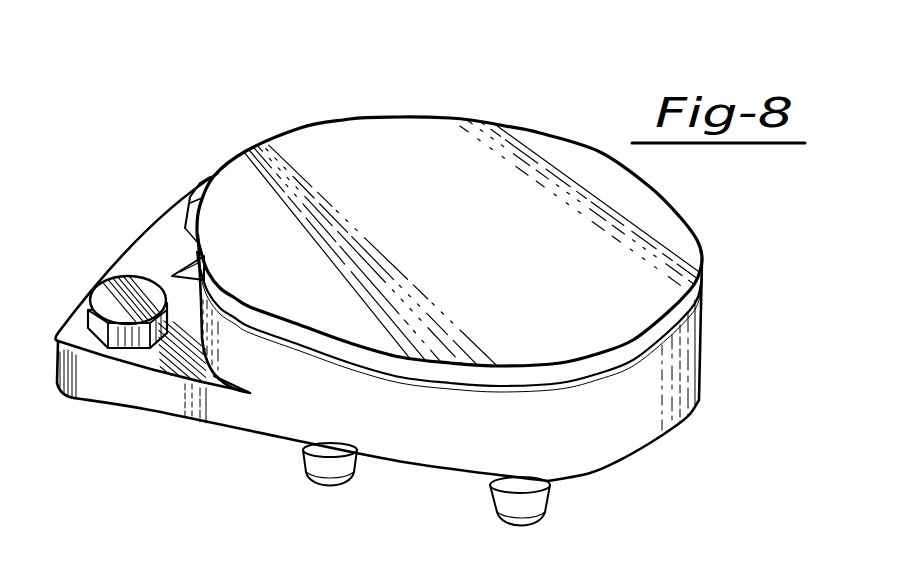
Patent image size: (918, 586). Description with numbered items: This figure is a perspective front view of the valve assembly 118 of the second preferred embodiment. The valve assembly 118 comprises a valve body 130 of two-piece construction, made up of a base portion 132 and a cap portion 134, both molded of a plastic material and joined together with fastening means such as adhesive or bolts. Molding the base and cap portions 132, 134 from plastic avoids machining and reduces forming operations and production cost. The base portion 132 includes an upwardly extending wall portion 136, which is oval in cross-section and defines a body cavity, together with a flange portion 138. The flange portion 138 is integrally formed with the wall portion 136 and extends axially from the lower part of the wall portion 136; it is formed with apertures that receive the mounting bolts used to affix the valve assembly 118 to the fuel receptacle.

The valve assembly 118 is at (118, 242).
The valve body 130 is at (112, 386).
The base portion 132 is at (584, 438).
The cap portion 134 is at (408, 177).
The wall portion 136 is at (250, 350).
The flange portion 138 is at (175, 365).